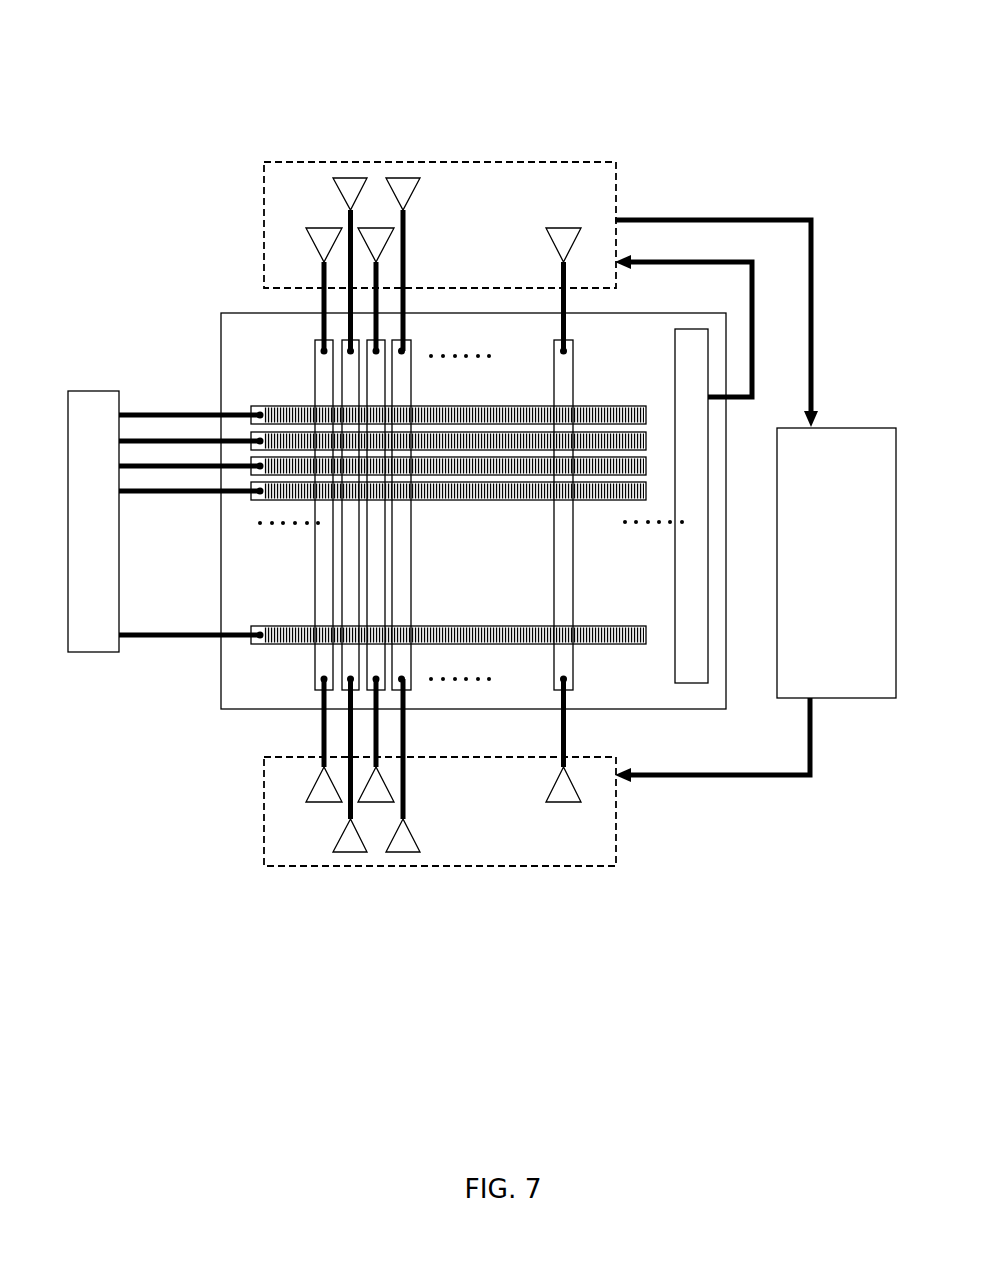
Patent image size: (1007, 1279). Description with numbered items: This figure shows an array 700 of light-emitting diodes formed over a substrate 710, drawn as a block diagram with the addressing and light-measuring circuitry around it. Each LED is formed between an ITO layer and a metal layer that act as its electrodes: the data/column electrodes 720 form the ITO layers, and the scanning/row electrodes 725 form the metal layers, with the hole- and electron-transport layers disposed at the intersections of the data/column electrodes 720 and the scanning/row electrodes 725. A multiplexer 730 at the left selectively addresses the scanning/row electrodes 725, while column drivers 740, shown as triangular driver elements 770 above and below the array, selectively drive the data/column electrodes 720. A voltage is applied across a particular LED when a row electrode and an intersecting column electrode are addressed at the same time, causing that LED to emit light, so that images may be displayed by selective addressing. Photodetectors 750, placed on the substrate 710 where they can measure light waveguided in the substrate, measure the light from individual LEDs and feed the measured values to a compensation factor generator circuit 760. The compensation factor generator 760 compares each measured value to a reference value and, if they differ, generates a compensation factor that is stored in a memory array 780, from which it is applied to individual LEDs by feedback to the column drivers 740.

The array 700 is at (691, 110).
The substrate 710 is at (256, 711).
The data/column electrodes 720 is at (401, 356).
The scanning/row electrodes 725 is at (272, 393).
The multiplexer 730 is at (82, 378).
The column drivers 740 is at (359, 853).
The photodetectors 750 is at (693, 340).
The compensation factor generator circuit 760 is at (596, 146).
The sense amplifier / driver 770 is at (348, 166).
The memory array 780 is at (866, 713).